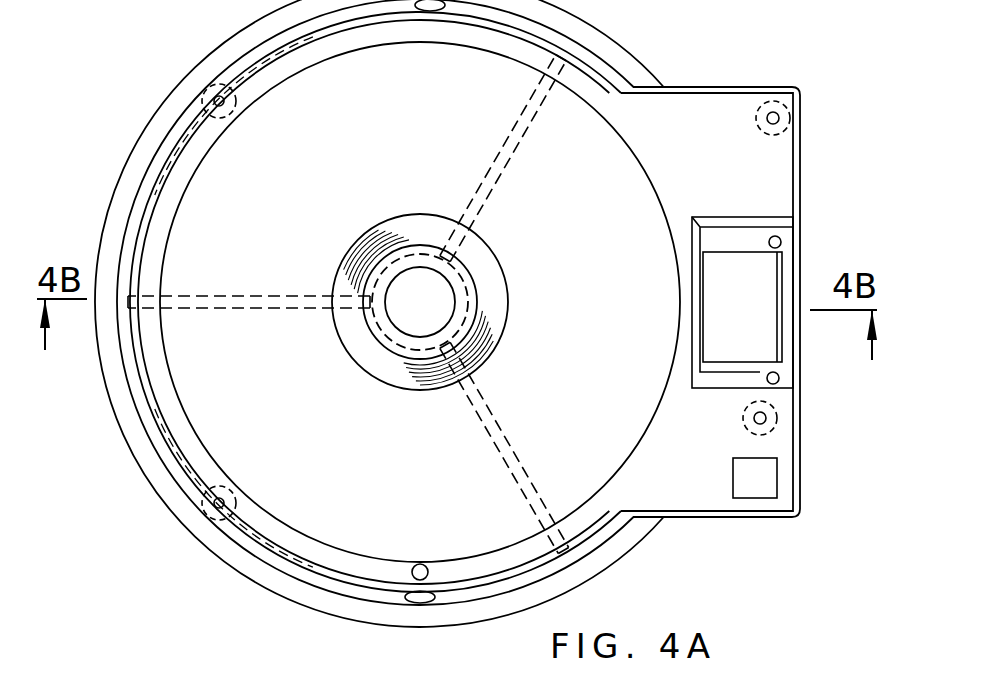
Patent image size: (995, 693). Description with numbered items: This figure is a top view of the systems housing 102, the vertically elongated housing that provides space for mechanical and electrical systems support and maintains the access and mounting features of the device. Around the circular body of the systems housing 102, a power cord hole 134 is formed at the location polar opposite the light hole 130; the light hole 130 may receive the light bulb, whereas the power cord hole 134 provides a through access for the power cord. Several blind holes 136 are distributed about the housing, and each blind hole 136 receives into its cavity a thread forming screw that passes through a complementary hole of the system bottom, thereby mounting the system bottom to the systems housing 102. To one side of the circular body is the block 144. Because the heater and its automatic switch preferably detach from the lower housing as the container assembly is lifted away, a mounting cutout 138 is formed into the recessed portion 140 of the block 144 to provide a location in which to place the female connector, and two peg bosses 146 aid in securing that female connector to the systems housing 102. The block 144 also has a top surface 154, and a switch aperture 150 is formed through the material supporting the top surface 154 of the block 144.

The systems housing 102 is at (648, 55).
The light hole 130 is at (420, 604).
The power cord hole 134 is at (432, 12).
The blind holes 136 is at (214, 98).
The mounting cutout 138 is at (766, 324).
The recessed portion 140 is at (697, 305).
The block 144 is at (696, 517).
The peg bosses 146 is at (769, 242).
The switch aperture 150 is at (785, 468).
The top surface 154 is at (668, 497).